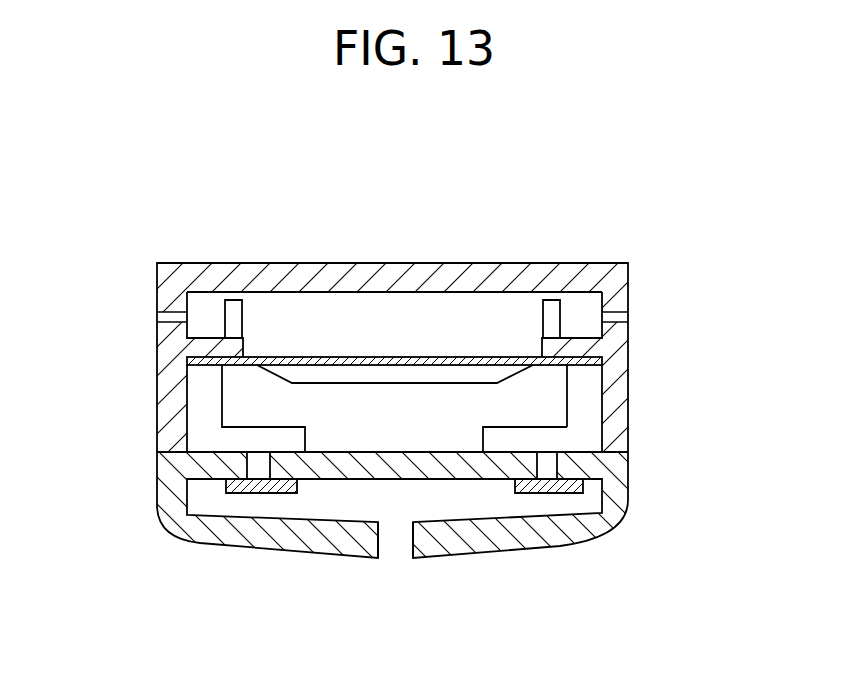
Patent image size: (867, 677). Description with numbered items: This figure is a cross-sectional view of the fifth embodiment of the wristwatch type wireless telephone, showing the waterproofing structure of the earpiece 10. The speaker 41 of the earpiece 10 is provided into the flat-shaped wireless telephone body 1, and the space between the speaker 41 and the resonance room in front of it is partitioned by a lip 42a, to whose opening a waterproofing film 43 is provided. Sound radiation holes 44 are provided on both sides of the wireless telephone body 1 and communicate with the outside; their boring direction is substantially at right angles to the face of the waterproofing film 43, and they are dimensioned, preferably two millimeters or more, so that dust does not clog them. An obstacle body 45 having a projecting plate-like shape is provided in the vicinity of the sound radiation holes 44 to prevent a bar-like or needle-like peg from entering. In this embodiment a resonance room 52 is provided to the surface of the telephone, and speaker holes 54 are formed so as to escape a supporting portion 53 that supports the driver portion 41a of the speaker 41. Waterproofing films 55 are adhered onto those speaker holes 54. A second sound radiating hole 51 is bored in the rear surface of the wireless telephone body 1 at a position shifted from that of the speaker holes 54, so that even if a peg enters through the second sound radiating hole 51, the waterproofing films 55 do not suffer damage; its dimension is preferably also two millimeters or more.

The wireless telephone body 1 is at (623, 390).
The earpiece 10 is at (594, 244).
The speaker 41 is at (232, 402).
The driver portion 41a is at (473, 440).
The lip 42a is at (437, 303).
The waterproofing film 43 is at (352, 357).
The sound radiation holes 44 is at (170, 316).
The obstacle body 45 is at (240, 300).
The second sound radiating hole 51 is at (398, 537).
The resonance room 52 is at (473, 497).
The supporting portion 53 is at (347, 470).
The speaker holes 54 is at (253, 466).
The waterproofing films 55 is at (240, 488).